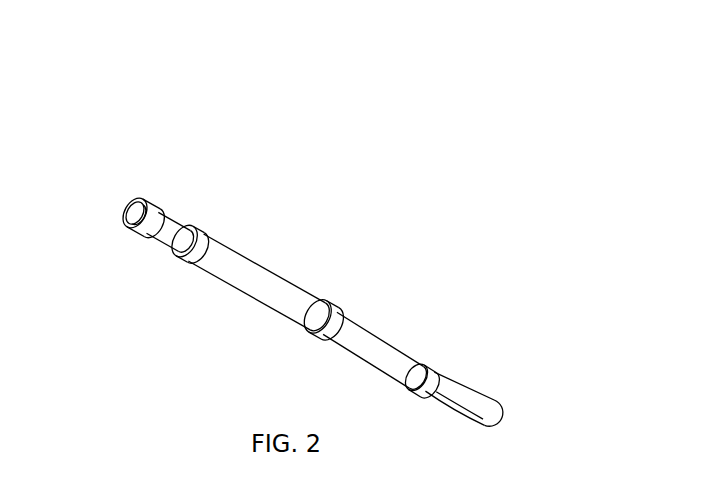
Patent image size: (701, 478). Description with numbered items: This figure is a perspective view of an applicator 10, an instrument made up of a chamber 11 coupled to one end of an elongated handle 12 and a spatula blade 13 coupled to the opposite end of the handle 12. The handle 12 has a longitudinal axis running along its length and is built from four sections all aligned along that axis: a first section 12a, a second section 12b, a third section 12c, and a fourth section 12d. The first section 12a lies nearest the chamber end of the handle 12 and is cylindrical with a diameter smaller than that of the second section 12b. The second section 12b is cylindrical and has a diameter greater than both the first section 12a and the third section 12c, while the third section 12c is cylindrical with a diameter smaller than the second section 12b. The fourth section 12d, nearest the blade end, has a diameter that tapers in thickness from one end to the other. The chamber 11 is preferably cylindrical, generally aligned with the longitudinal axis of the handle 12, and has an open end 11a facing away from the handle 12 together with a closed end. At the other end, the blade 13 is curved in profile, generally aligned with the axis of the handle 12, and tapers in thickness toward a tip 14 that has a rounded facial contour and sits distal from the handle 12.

The applicator 10 is at (338, 239).
The chamber 11 is at (127, 211).
The open end 11a is at (126, 228).
The elongated handle 12 is at (298, 300).
The first section 12a is at (163, 234).
The second section 12b is at (208, 267).
The third section 12c is at (325, 320).
The fourth section 12d is at (395, 368).
The spatula blade 13 is at (458, 393).
The tip 14 is at (504, 412).